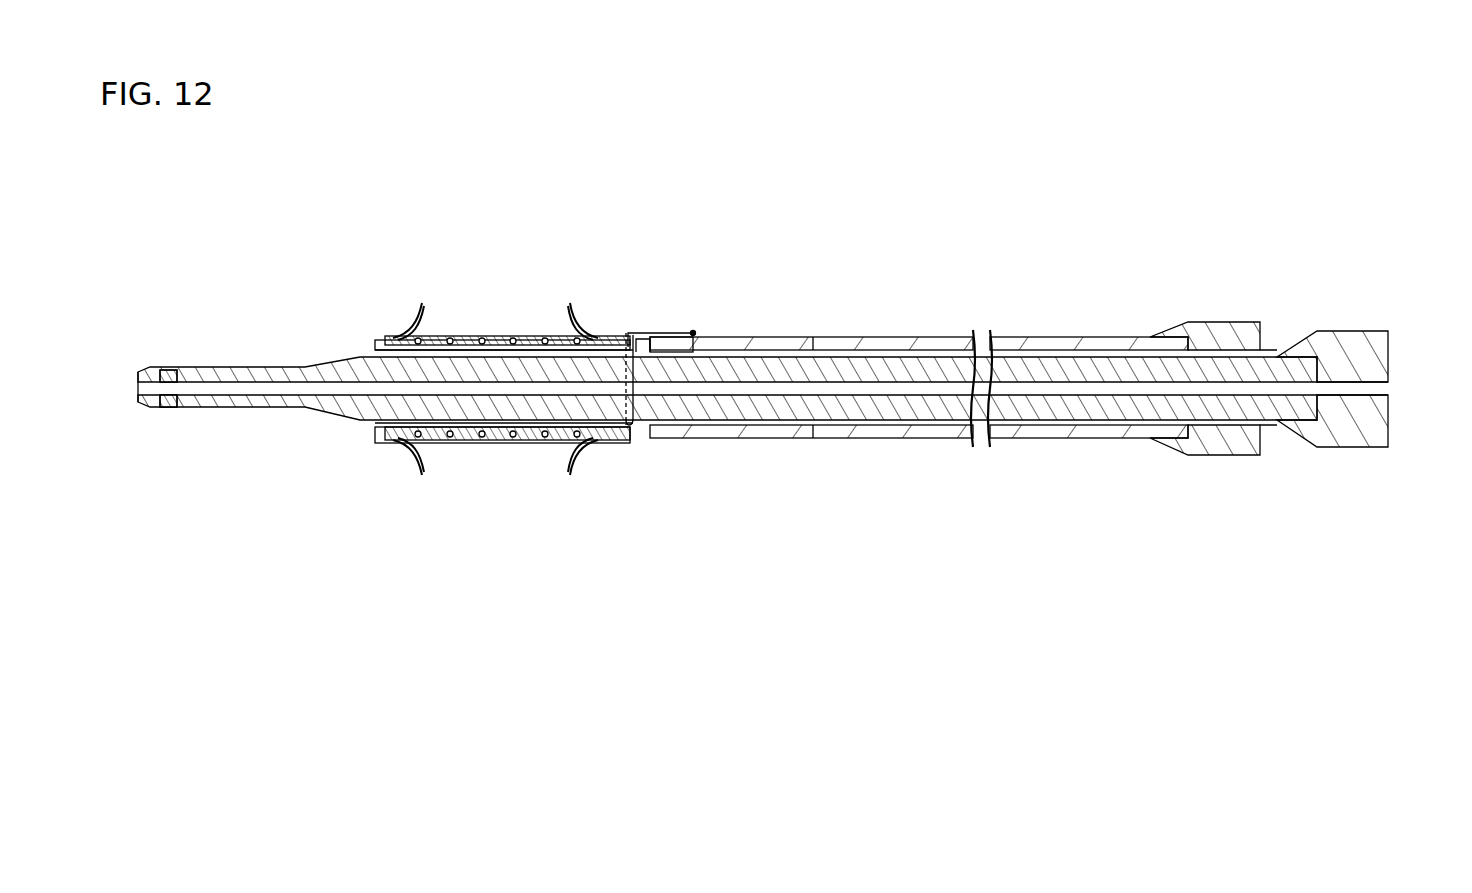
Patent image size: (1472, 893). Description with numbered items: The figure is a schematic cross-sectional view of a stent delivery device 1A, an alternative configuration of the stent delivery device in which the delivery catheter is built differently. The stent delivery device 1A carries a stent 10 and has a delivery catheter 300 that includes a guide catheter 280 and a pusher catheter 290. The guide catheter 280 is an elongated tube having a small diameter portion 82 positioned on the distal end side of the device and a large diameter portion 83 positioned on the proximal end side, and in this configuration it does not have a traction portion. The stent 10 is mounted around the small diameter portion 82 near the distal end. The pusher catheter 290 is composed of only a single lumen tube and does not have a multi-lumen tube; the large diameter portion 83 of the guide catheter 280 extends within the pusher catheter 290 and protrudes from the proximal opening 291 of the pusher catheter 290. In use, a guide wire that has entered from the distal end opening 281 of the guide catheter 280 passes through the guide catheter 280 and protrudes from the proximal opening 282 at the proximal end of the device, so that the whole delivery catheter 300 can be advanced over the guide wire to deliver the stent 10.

The stent delivery device 1A is at (1154, 262).
The delivery catheter 300 is at (840, 285).
The stent 10 is at (531, 450).
The small diameter portion 82 is at (243, 367).
The large diameter portion 83 is at (400, 415).
The guide catheter 280 is at (224, 416).
The distal end opening 281 is at (137, 385).
The proximal opening 282 is at (1388, 387).
The pusher catheter 290 is at (890, 447).
The proximal opening 291 is at (1215, 420).